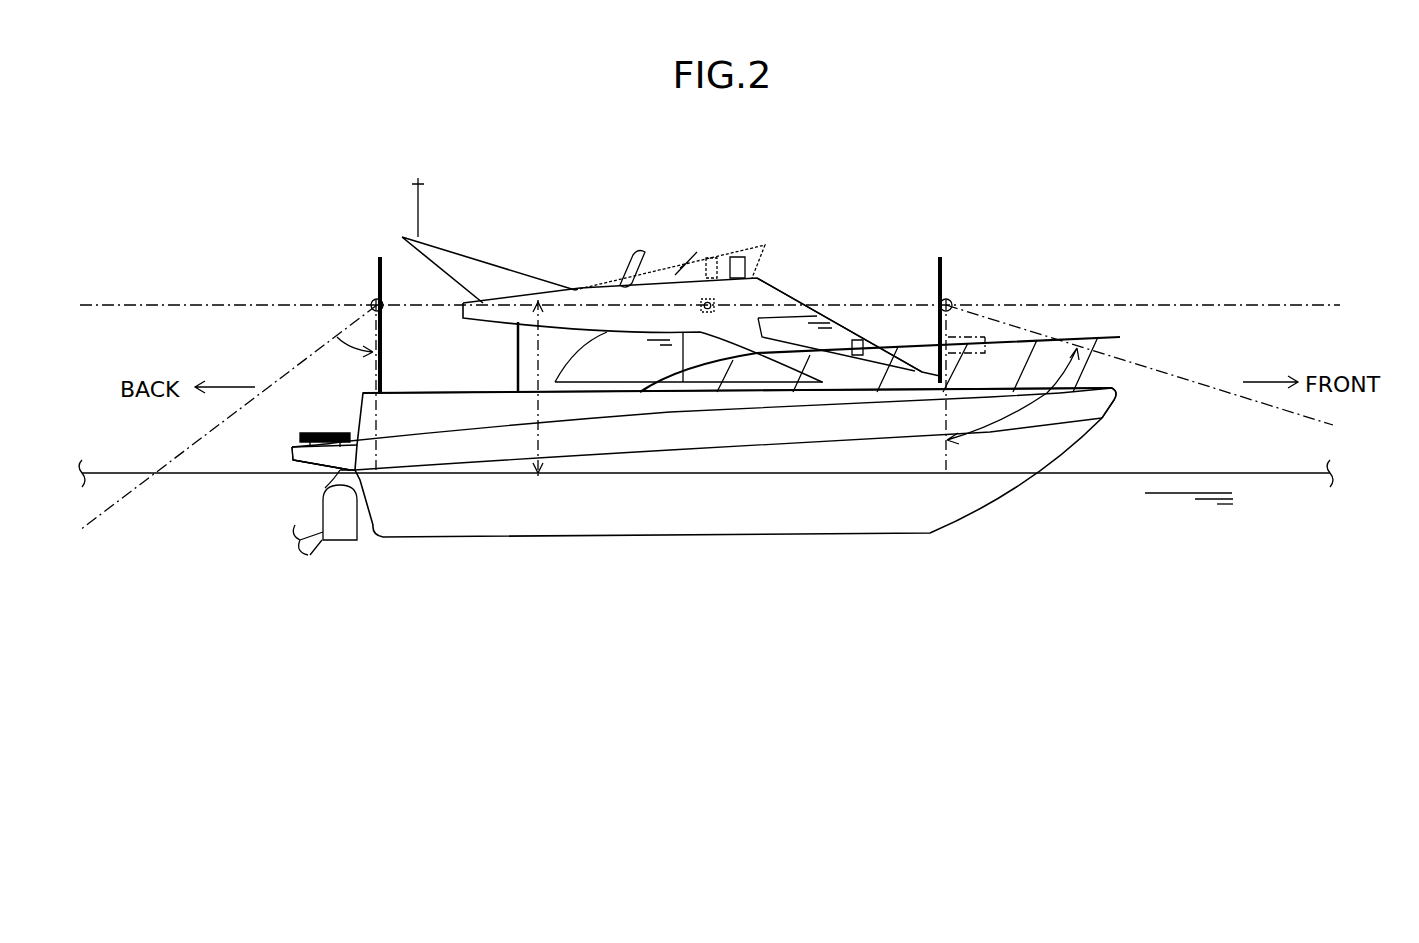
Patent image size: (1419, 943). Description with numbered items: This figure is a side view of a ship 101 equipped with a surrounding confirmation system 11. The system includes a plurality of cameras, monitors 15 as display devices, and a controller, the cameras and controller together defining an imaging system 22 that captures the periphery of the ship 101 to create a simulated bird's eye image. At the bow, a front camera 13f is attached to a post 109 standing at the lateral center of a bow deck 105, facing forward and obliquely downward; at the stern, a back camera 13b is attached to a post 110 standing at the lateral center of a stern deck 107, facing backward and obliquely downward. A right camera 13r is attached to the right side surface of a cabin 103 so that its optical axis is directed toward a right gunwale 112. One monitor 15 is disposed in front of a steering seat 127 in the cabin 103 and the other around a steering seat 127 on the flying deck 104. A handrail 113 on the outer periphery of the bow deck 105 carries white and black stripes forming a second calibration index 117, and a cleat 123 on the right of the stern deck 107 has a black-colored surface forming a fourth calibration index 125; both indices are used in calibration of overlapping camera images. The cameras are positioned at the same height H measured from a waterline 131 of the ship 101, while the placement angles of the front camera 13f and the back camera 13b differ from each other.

The surrounding confirmation system 11 is at (1086, 282).
The imaging system 22 is at (295, 292).
The back camera 13b is at (370, 300).
The front camera 13f is at (950, 295).
The right camera 13r is at (720, 305).
The monitor 15 is at (712, 258).
The ship 101 is at (1143, 357).
The cabin 103 is at (800, 302).
The flying deck 104 is at (580, 288).
The bow deck 105 is at (920, 380).
The stern deck 107 is at (430, 435).
The post 109 is at (943, 265).
The post 110 is at (378, 265).
The right gunwale 112 is at (617, 417).
The handrail 113 is at (1088, 372).
The second calibration index 117 is at (975, 335).
The cleat 123 is at (293, 445).
The fourth calibration index 125 is at (321, 458).
The steering seat 127 is at (627, 248).
The waterline 131 is at (820, 477).